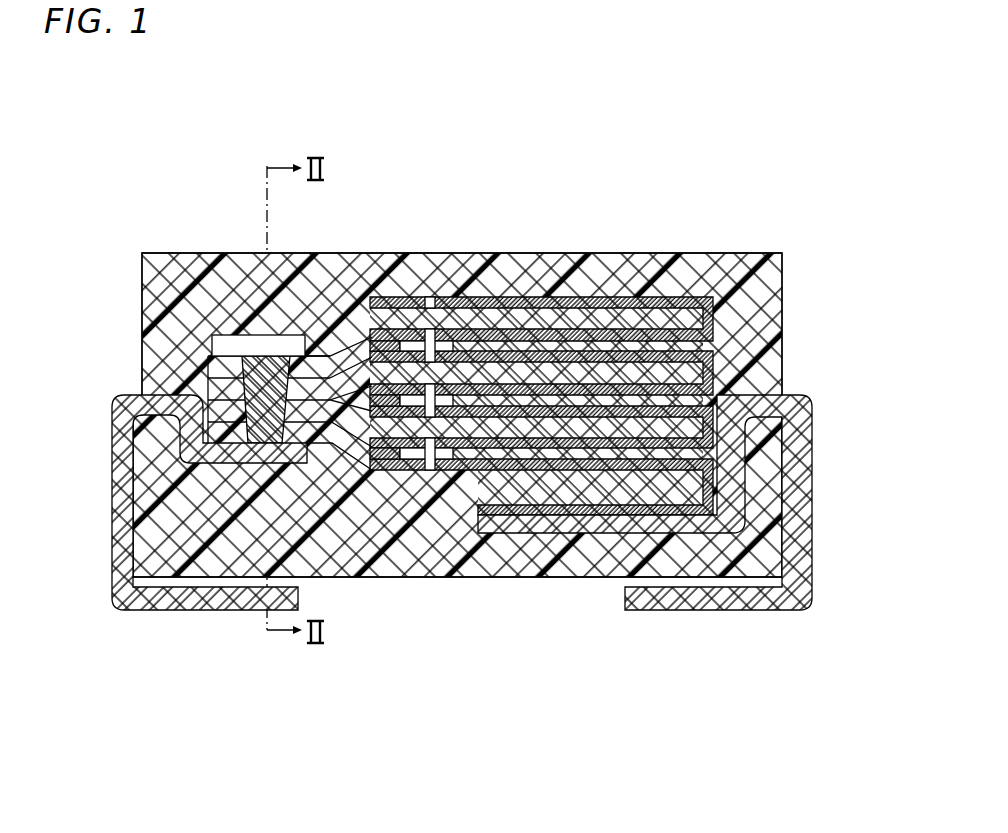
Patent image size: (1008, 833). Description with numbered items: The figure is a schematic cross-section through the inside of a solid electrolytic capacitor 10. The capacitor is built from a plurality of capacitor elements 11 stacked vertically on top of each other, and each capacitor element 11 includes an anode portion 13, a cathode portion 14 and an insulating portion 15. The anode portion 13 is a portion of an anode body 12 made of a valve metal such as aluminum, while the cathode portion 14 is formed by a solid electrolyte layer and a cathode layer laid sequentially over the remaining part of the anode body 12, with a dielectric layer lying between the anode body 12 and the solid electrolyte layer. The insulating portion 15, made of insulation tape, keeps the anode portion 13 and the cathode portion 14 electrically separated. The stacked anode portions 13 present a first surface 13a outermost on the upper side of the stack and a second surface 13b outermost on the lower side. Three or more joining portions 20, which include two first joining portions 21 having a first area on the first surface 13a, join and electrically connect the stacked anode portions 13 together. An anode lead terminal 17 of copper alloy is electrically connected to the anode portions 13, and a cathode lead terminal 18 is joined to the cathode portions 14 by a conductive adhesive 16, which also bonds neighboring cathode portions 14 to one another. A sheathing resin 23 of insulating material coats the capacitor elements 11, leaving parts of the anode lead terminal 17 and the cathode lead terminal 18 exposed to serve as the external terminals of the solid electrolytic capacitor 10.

The solid electrolytic capacitor 10 is at (153, 182).
The capacitor element 11 is at (619, 418).
The anode body 12 is at (587, 318).
The anode portion 13 is at (223, 354).
The first surface 13a is at (318, 355).
The second surface 13b is at (298, 456).
The cathode portion 14 is at (672, 297).
The insulating portion 15 is at (412, 297).
The conductive adhesive 16 is at (714, 336).
The anode lead terminal 17 is at (206, 521).
The cathode lead terminal 18 is at (812, 520).
The joining portion 20 is at (172, 399).
The first joining portion 21 is at (207, 364).
The sheathing resin 23 is at (520, 576).